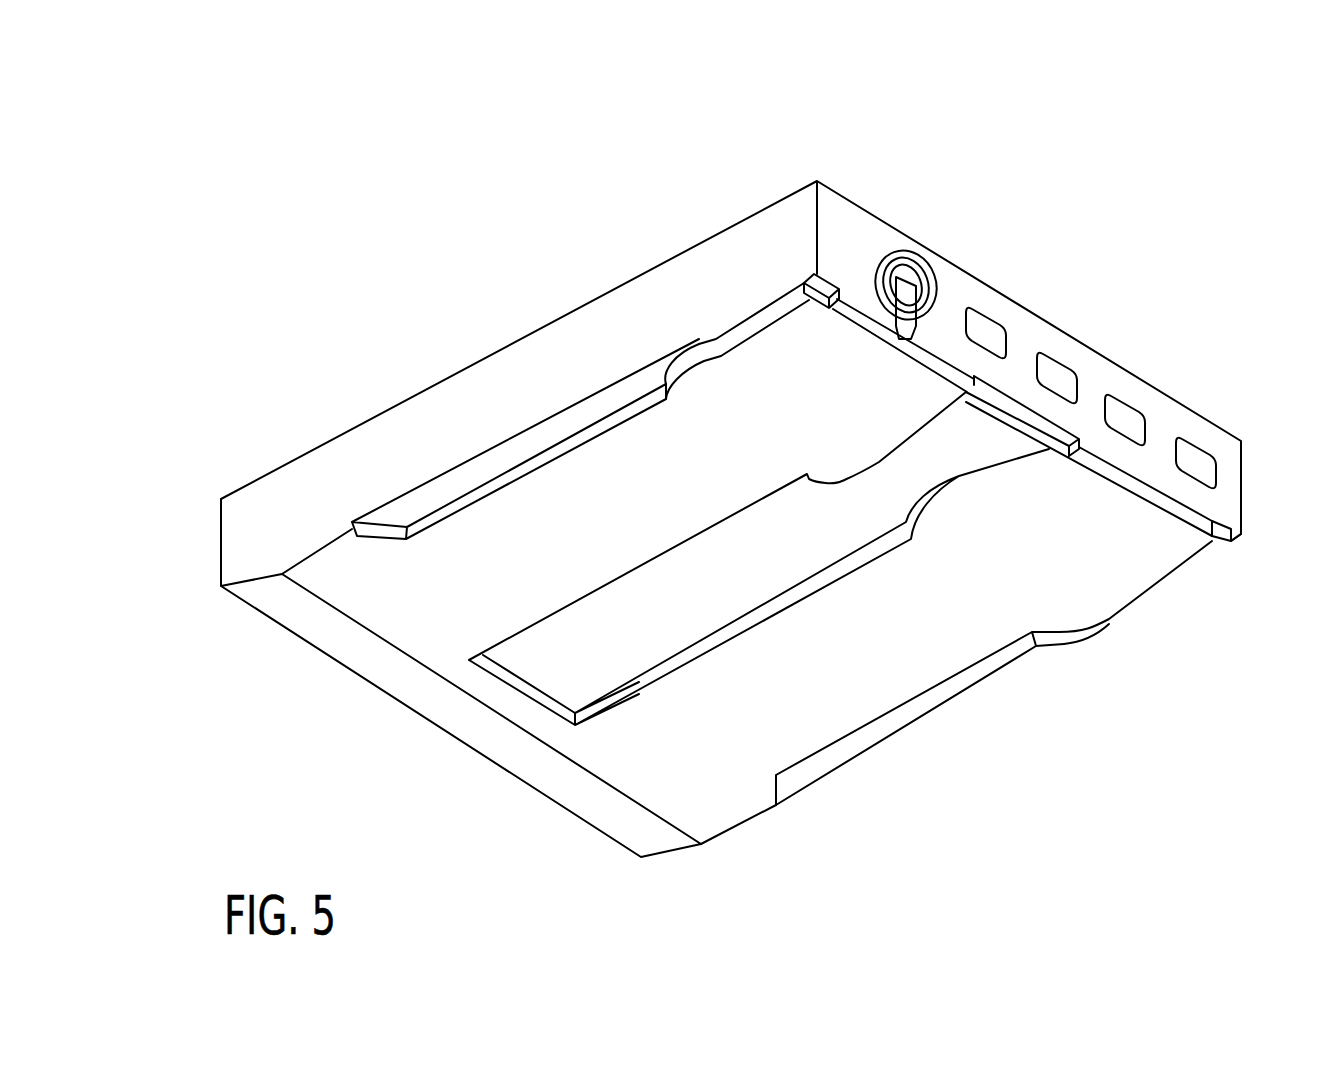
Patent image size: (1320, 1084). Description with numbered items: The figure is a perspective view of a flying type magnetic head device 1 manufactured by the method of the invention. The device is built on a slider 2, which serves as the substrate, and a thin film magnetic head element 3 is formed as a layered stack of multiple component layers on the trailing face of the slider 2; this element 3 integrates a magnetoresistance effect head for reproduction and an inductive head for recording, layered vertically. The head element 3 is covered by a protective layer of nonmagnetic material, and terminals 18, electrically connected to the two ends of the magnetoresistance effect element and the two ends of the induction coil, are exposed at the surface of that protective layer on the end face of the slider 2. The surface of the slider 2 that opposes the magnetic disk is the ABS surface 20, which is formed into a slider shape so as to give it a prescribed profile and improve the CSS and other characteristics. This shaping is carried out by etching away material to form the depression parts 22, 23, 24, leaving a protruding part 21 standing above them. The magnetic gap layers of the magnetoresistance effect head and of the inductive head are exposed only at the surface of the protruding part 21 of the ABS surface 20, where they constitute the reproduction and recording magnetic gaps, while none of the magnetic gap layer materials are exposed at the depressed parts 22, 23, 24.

The magnetic head device 1 is at (1078, 170).
The slider 2 is at (521, 358).
The thin film magnetic head element 3 is at (935, 240).
The terminals 18 is at (1062, 373).
The ABS surface 20 is at (733, 790).
The protruding part 21 is at (693, 343).
The depression part 22 is at (577, 663).
The depression part 23 is at (439, 488).
The depression part 24 is at (784, 302).